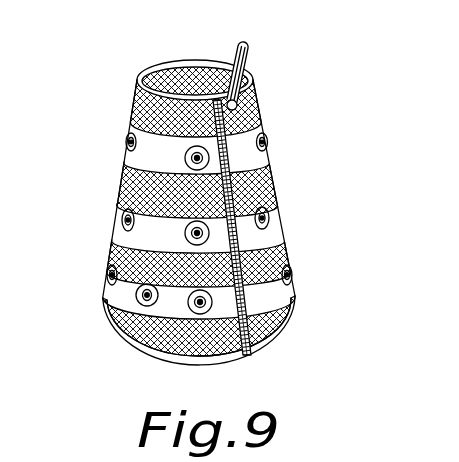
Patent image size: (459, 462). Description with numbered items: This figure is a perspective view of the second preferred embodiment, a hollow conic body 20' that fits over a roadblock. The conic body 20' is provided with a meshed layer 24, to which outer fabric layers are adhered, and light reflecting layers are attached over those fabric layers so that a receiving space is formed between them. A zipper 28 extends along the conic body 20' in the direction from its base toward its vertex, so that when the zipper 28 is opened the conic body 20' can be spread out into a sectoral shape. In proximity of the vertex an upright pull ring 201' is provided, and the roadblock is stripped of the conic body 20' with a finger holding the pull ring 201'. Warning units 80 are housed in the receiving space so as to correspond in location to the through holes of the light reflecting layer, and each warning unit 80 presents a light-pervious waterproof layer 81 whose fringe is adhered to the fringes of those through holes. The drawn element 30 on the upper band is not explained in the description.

The shade cover body 20' is at (241, 212).
The mesh panel 24 is at (135, 103).
The zipper 28 is at (249, 294).
The grommet 30 is at (126, 141).
The grommet 80 is at (271, 215).
The solid fabric band 81 is at (122, 290).
The zipper pull tab 201' is at (294, 59).